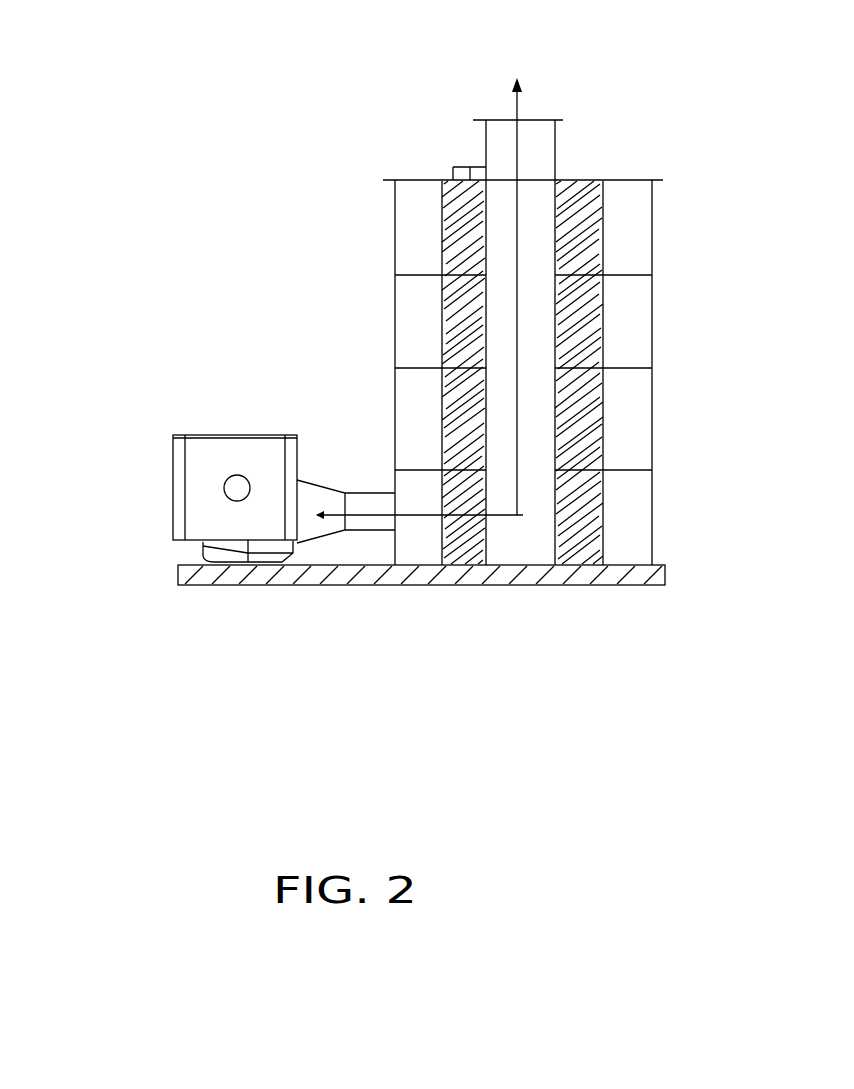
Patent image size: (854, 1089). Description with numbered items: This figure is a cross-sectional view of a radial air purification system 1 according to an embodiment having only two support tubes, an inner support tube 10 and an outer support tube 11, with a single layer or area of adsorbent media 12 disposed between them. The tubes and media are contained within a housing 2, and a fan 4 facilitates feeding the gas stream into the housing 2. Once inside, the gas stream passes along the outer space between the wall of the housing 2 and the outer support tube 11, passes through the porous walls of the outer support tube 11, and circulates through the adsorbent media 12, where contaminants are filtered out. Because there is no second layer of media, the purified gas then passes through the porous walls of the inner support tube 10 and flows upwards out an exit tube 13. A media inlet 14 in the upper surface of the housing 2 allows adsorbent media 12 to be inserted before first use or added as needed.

The radial air purification system 1 is at (196, 190).
The housing 2 is at (652, 260).
The fan 4 is at (215, 455).
The inner support tube 10 is at (538, 536).
The outer support tube 11 is at (612, 420).
The adsorbent media 12 is at (460, 550).
The exit tube 13 is at (566, 135).
The media inlet 14 is at (455, 158).